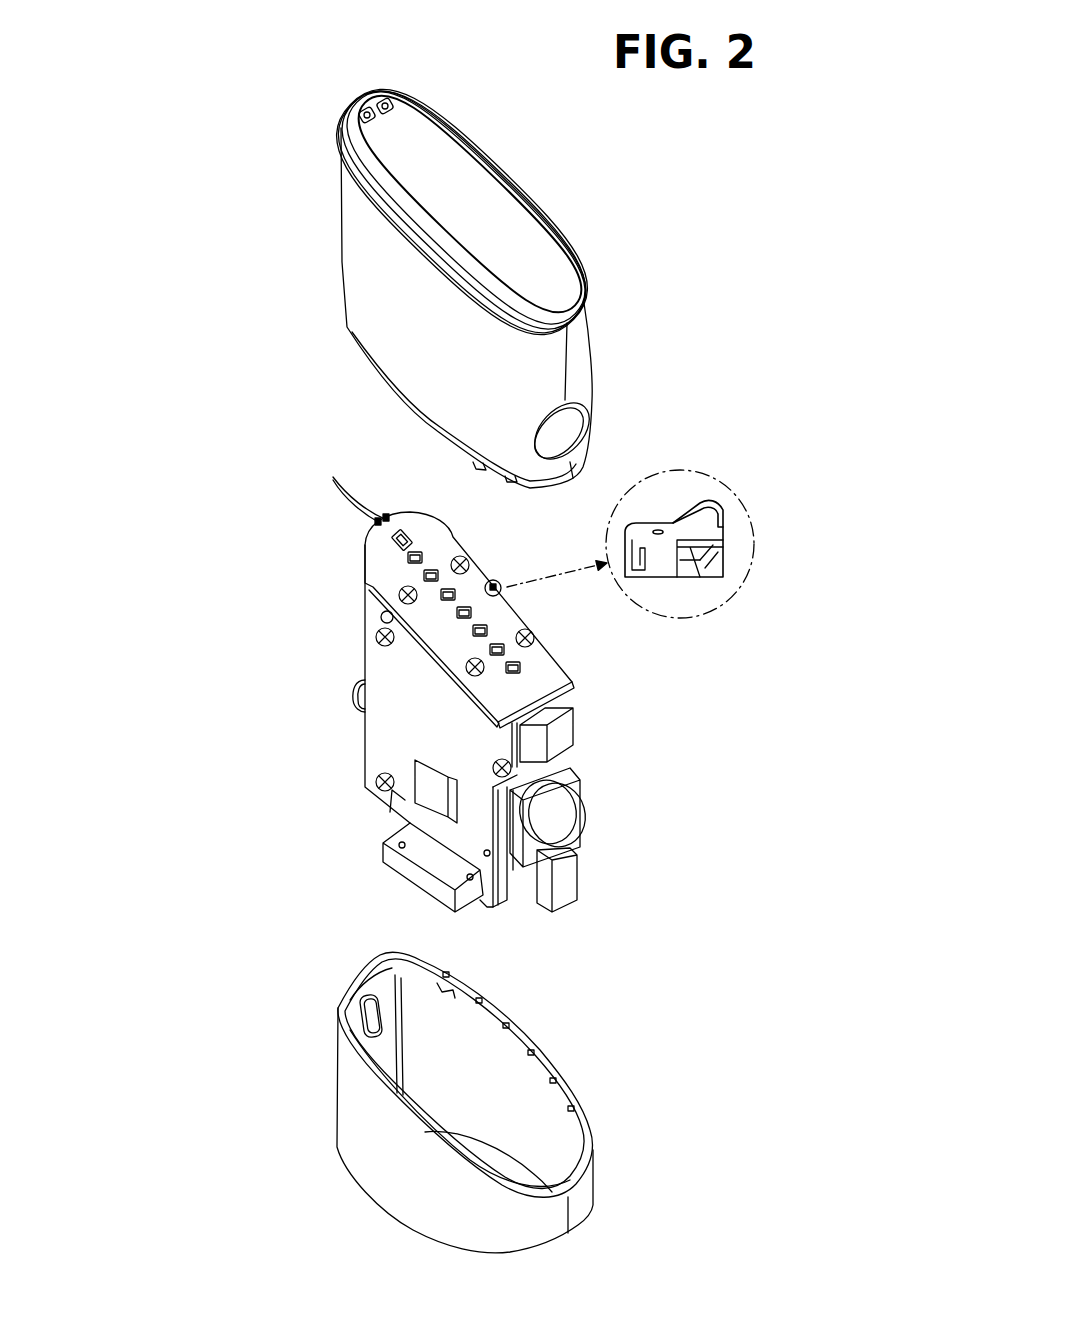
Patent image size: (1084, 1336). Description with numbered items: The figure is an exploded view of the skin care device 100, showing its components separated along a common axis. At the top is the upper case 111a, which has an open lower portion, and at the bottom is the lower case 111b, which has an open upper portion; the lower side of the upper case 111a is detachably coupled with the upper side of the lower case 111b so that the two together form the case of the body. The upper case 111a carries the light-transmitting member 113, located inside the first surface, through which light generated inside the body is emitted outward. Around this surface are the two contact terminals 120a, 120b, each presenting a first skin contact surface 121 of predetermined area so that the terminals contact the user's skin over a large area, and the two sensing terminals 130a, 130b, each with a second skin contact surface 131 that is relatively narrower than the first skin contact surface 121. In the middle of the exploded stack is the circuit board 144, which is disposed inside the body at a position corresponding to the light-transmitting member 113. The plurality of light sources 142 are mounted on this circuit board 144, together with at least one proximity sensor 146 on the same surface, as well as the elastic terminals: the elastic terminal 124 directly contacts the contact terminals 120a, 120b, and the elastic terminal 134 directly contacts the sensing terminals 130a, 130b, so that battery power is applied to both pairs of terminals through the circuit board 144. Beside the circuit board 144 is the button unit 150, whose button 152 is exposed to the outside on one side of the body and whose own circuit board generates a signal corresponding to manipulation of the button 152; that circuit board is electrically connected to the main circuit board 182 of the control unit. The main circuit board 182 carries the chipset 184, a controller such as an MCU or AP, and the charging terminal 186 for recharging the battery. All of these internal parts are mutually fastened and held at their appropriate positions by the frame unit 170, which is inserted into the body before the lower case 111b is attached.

The skin care device 100 is at (520, 74).
The upper case 111a is at (588, 348).
The lower case 111b is at (592, 1172).
The light-transmitting member 113 is at (530, 265).
The contact terminal 120a is at (492, 160).
The contact terminal 120b is at (378, 182).
The first skin contact surface 121 is at (518, 200).
The elastic terminal 124 is at (494, 585).
The sensing terminal 130a is at (384, 98).
The sensing terminal 130b is at (362, 107).
The second skin contact surface 131 is at (378, 116).
The elastic terminal 134 is at (377, 523).
The light source 142 is at (413, 558).
The circuit board 144 is at (553, 666).
The proximity sensor 146 is at (404, 535).
The button unit 150 is at (590, 775).
The button 152 is at (575, 815).
The frame unit 170 is at (517, 893).
The main circuit board 182 is at (370, 737).
The chipset 184 is at (420, 797).
The charging terminal 186 is at (355, 692).